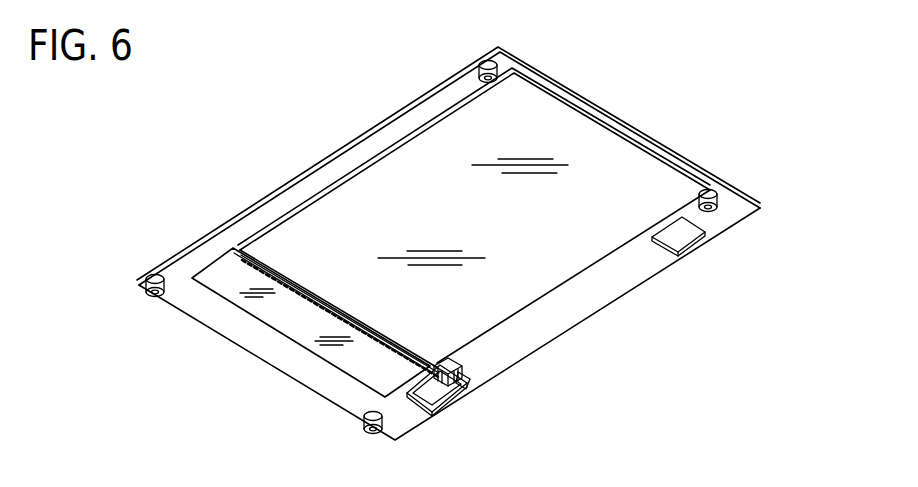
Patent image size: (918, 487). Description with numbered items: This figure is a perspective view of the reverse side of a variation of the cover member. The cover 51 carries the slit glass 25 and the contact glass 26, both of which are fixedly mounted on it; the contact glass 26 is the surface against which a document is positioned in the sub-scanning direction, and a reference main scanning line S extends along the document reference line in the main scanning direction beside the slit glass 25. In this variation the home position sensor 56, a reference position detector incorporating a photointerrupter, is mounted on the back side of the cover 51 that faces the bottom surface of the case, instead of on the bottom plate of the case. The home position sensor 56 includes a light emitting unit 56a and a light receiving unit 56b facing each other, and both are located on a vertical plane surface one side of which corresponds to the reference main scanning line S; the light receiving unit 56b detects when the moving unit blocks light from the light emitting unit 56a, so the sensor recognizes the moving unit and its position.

The cover 51 is at (415, 113).
The contact glass 26 is at (592, 135).
The slit glass 25 is at (357, 363).
The reference main scanning line S is at (339, 304).
The home position sensor 56 is at (470, 364).
The light emitting unit 56a is at (437, 410).
The light receiving unit 56b is at (463, 397).